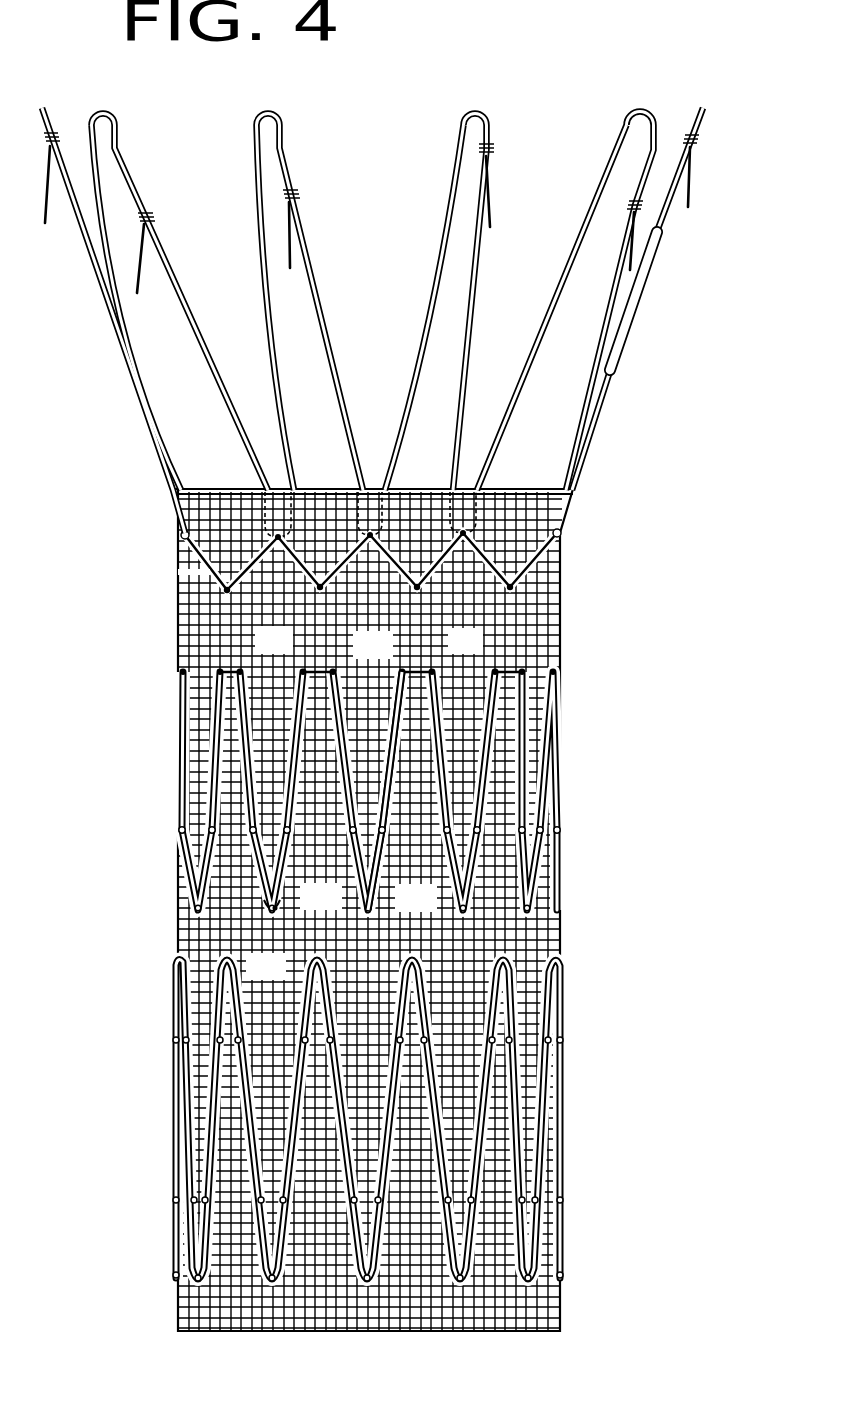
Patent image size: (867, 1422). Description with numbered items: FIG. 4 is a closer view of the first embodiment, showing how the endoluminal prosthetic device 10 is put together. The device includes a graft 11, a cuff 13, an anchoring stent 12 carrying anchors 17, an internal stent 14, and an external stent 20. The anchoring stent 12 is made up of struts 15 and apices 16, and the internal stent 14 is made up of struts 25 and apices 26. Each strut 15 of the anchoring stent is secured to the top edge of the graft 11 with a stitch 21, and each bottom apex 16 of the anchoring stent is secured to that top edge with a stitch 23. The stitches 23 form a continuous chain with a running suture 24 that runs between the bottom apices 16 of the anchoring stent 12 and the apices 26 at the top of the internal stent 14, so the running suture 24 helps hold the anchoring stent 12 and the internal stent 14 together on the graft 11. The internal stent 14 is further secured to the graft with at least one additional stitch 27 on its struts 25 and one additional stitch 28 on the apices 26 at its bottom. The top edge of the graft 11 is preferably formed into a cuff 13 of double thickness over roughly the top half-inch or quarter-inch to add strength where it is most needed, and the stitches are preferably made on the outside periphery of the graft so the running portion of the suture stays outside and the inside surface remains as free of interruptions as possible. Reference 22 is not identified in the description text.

The endoluminal prosthetic device 10 is at (382, 684).
The graft 11 is at (180, 927).
The anchoring stent 12 is at (647, 107).
The cuff 13 is at (538, 515).
The internal stent 14 is at (197, 752).
The struts 15 is at (540, 340).
The apices 16 is at (480, 513).
The anchors 17 is at (493, 211).
The external stent 20 is at (542, 1132).
The stitch 21 is at (450, 484).
The crown wire 22 is at (567, 563).
The stitch 23 is at (413, 592).
The running suture 24 is at (483, 557).
The struts 25 is at (317, 593).
The apices 26 is at (227, 588).
The stitch 27 is at (382, 833).
The stitch 28 is at (275, 914).